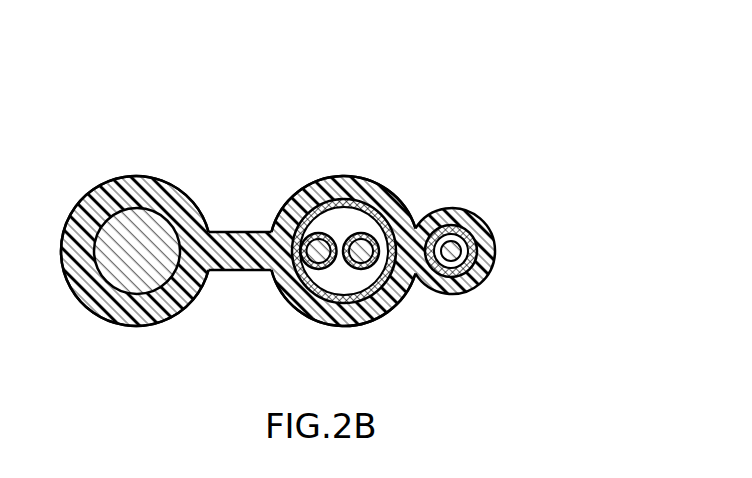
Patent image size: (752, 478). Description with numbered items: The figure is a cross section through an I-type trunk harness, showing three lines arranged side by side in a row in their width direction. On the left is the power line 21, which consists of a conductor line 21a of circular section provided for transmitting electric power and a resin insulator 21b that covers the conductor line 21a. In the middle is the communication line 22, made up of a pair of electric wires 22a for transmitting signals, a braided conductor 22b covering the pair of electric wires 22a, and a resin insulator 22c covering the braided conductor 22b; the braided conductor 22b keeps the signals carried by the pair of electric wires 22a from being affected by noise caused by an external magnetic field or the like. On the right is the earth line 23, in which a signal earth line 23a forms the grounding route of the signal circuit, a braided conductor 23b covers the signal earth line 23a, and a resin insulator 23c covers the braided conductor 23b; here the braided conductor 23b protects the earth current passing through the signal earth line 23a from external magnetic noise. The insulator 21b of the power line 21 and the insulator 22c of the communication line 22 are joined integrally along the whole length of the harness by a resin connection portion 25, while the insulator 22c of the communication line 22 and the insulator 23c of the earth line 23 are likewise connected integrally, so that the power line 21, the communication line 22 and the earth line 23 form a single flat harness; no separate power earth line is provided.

The power line 21 is at (205, 93).
The conductor line 21a is at (117, 233).
The insulator 21b is at (152, 176).
The communication line 22 is at (438, 93).
The pair of electric wires 22a is at (352, 203).
The braided conductor 22b is at (361, 233).
The insulator 22c is at (374, 180).
The earth line 23 is at (452, 93).
The signal earth line 23a is at (449, 238).
The braided conductor 23b is at (492, 248).
The insulator 23c is at (492, 268).
The connection portion 25 is at (233, 271).